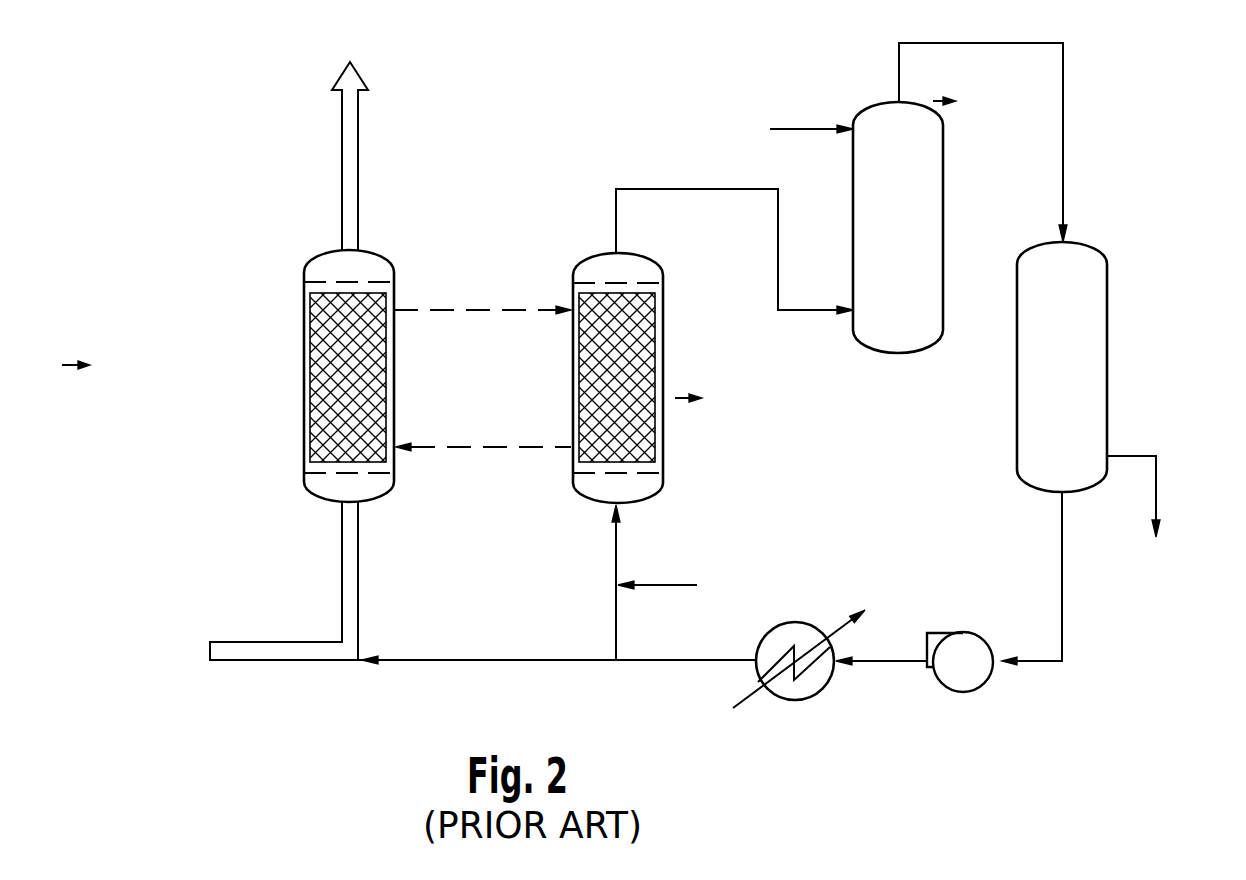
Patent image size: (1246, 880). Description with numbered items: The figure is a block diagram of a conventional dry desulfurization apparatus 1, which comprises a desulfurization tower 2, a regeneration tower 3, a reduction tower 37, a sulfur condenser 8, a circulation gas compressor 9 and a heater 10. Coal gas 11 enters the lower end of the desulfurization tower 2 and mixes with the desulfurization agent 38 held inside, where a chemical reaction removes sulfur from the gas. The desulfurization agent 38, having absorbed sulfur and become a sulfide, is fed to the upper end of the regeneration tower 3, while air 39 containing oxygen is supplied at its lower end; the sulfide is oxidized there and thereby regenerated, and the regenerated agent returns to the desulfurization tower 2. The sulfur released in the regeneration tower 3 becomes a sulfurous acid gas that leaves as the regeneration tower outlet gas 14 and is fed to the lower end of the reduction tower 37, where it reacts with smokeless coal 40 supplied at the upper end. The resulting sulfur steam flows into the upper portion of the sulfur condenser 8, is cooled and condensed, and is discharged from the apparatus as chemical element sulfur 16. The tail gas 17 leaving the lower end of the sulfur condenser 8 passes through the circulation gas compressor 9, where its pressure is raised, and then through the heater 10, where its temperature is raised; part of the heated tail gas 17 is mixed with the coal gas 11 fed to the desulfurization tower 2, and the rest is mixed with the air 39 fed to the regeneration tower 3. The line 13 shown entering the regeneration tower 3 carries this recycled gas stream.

The dry desulfurization apparatus 1 is at (1157, 166).
The desulfurization tower 2 is at (313, 284).
The regeneration tower 3 is at (590, 270).
The sulfur condenser 8 is at (1093, 268).
The circulation gas compressor 9 is at (970, 670).
The heater 10 is at (787, 690).
The coal gas 11 is at (288, 648).
The recycle gas line to second reactor 13 is at (613, 632).
The regeneration tower outlet gas 14 is at (615, 205).
The chemical element sulfur 16 is at (1157, 492).
The tail gas 17 is at (1048, 663).
The reduction tower 37 is at (917, 333).
The desulfurization agent 38 is at (313, 420).
The air 39 is at (668, 583).
The smokeless coal 40 is at (803, 128).